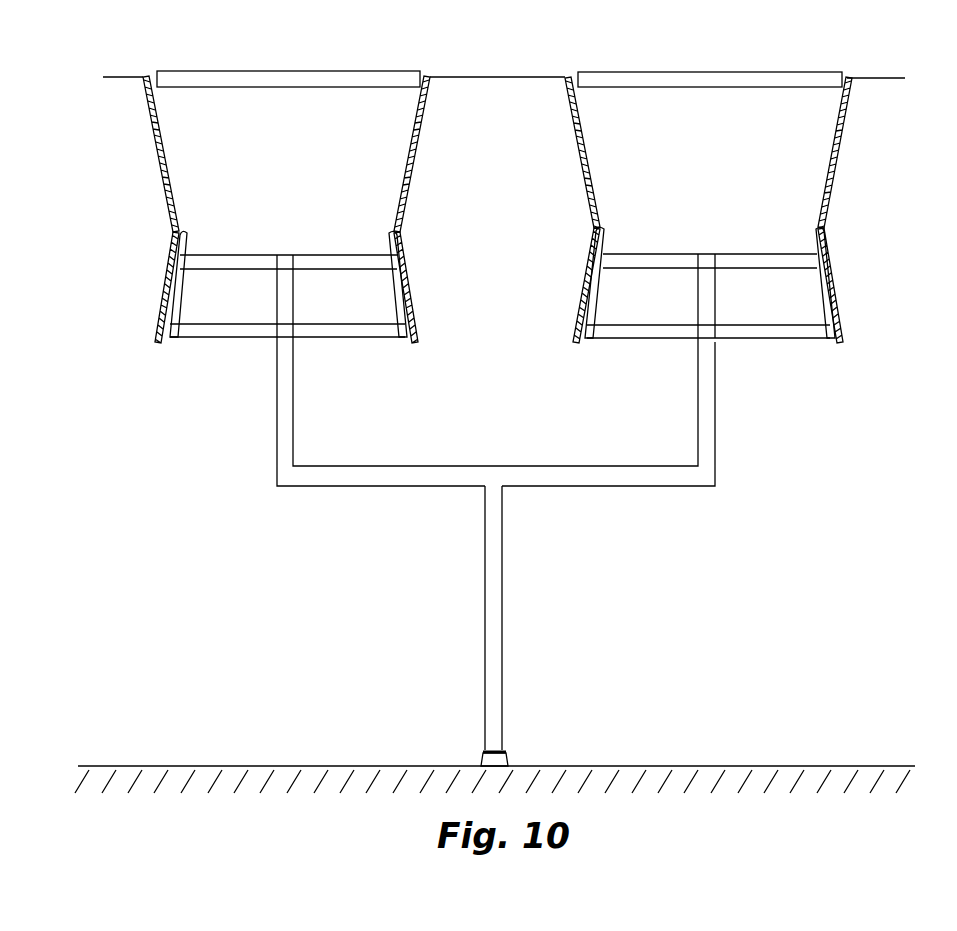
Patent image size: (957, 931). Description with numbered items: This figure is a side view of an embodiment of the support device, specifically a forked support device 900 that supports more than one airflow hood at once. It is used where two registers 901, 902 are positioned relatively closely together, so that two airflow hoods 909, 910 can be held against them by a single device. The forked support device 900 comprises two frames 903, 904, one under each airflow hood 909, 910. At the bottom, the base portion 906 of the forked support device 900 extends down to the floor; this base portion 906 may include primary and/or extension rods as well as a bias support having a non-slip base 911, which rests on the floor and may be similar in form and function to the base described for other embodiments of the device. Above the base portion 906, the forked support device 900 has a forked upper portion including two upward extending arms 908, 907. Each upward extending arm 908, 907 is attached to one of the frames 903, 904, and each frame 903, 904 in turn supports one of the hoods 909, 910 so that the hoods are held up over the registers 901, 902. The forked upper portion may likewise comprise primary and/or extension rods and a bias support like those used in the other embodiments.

The forked support device 900 is at (740, 513).
The register 901 is at (323, 75).
The register 902 is at (778, 73).
The frame 903 is at (310, 337).
The frame 904 is at (675, 338).
The base portion 906 is at (502, 632).
The upward extending arm 907 is at (585, 486).
The upward extending arm 908 is at (383, 475).
The airflow hood 909 is at (413, 190).
The airflow hood 910 is at (835, 183).
The non-slip base 911 is at (480, 762).